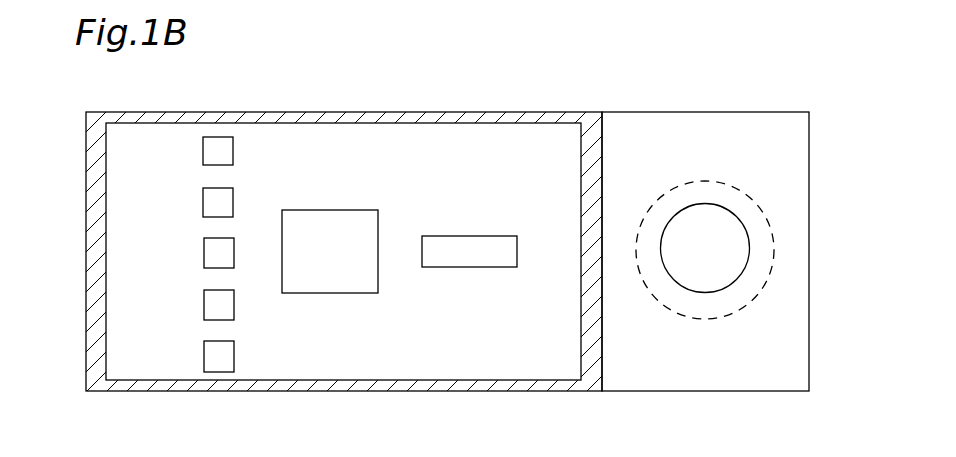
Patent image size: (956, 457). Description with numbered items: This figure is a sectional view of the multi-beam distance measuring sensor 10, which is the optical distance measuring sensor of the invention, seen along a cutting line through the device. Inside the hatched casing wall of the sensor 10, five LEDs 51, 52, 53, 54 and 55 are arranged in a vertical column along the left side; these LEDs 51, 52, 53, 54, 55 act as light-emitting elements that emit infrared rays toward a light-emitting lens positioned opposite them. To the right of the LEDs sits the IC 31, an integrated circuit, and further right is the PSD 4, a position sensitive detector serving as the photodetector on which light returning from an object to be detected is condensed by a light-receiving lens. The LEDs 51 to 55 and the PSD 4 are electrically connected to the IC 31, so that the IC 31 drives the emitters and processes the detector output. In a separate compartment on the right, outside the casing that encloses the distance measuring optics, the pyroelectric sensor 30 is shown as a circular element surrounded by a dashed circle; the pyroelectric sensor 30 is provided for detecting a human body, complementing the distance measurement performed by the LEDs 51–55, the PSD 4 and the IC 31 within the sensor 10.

The multi-beam distance measuring sensor 10 is at (75, 163).
The LED 51 is at (203, 150).
The LED 52 is at (203, 202).
The LED 53 is at (204, 253).
The LED 54 is at (204, 305).
The LED 55 is at (204, 357).
The IC 31 is at (333, 282).
The PSD 4 is at (447, 250).
The pyroelectric sensor 30 is at (702, 268).